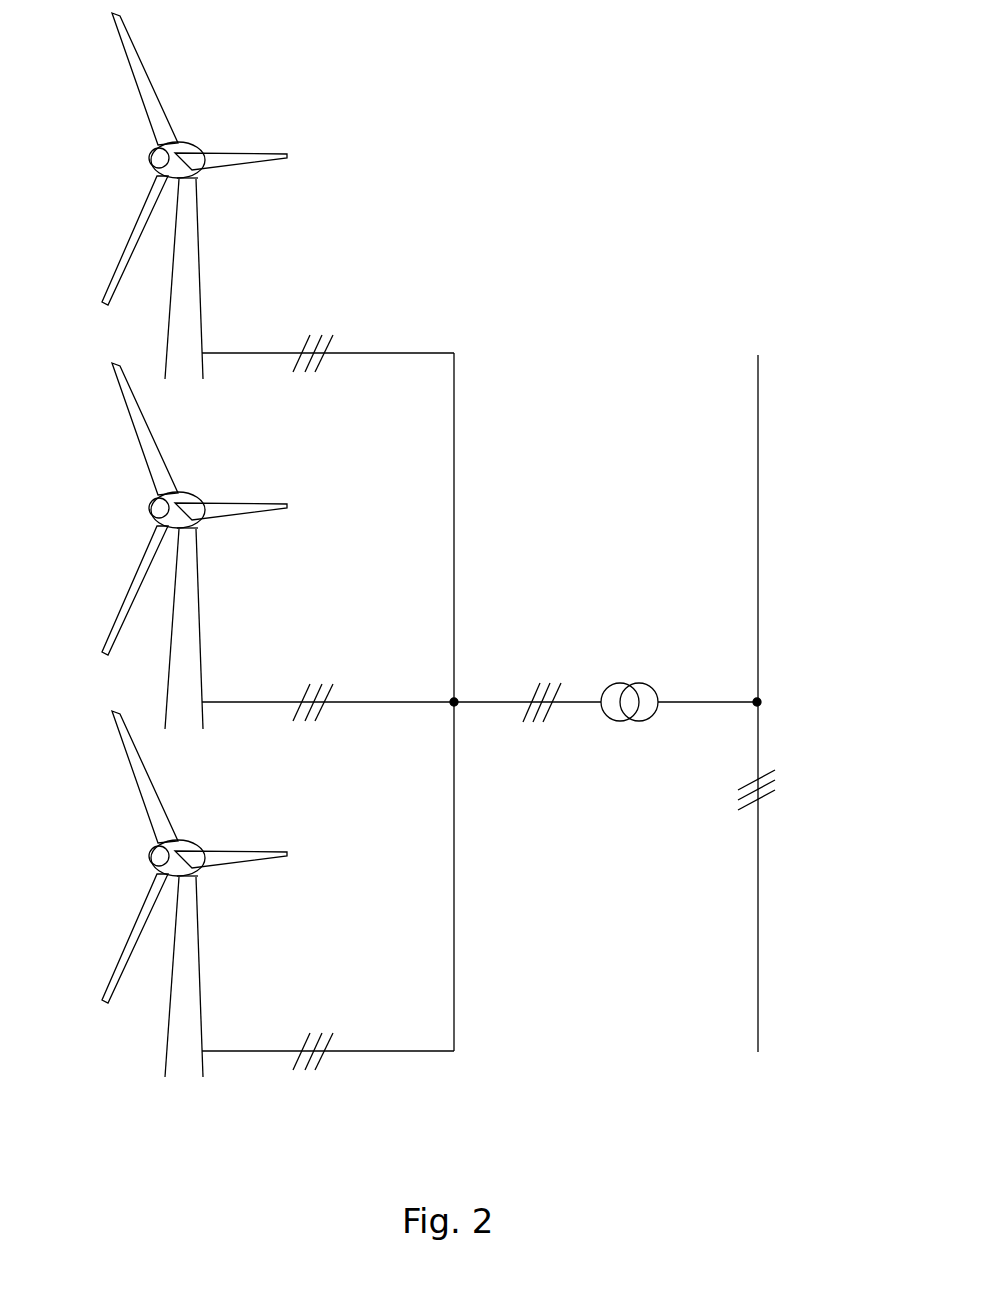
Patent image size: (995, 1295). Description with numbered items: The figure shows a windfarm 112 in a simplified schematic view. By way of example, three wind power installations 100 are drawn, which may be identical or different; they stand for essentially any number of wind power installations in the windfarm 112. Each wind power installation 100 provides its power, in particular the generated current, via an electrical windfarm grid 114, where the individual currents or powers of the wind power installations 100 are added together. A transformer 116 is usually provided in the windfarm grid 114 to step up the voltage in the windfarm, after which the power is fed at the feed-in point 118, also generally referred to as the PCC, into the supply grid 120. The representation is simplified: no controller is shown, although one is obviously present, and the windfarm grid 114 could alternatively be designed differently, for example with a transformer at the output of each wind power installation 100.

The wind power installation 100 is at (190, 258).
The windfarm 112 is at (537, 163).
The electrical windfarm grid 114 is at (480, 698).
The transformer 116 is at (631, 678).
The feed-in point 118 is at (768, 685).
The supply grid 120 is at (758, 390).